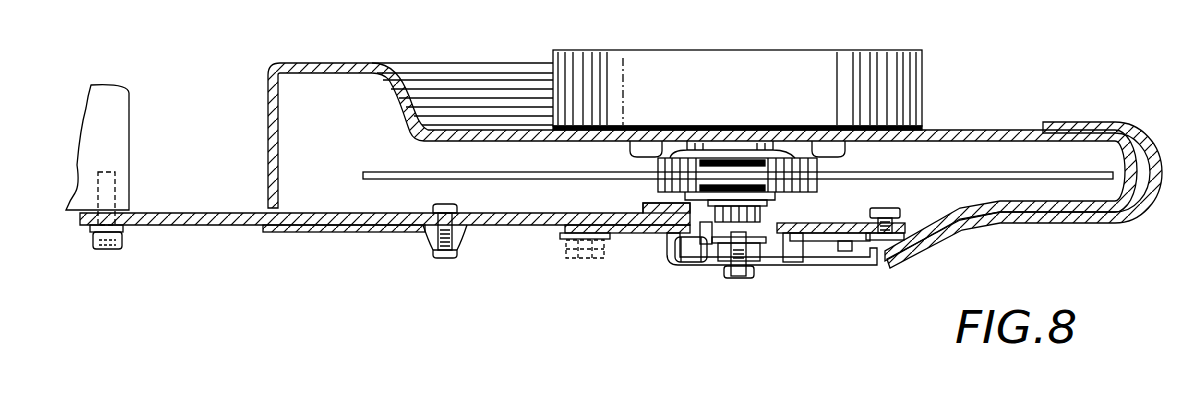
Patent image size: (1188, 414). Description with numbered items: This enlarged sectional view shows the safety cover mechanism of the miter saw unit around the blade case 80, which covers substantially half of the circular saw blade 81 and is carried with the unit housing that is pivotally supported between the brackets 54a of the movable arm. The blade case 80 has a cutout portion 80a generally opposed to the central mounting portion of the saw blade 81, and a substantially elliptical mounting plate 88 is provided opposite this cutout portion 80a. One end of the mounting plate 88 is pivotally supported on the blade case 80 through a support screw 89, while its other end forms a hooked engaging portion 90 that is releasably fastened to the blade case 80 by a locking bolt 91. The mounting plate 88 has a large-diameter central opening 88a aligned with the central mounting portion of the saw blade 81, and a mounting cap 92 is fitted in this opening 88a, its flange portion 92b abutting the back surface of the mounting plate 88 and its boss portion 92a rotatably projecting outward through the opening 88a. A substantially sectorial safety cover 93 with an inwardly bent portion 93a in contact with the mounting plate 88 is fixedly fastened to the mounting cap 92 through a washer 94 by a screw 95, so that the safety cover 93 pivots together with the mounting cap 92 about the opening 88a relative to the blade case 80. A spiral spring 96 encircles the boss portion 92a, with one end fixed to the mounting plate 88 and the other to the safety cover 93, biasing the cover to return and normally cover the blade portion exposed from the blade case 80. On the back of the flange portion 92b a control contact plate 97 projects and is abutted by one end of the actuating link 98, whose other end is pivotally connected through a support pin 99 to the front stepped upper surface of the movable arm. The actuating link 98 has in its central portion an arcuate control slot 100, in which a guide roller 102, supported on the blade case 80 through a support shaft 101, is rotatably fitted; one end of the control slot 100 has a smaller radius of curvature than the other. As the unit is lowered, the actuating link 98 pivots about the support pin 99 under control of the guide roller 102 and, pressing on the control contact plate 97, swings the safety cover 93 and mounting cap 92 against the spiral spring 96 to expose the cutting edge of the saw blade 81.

The brackets 54a is at (118, 140).
The blade case 80 is at (1023, 206).
The cutout portion 80a is at (843, 252).
The circular saw blade 81 is at (970, 170).
The mounting plate 88 is at (636, 234).
The central opening 88a is at (703, 245).
The support screw 89 is at (900, 258).
The hooked engaging portion 90 is at (560, 240).
The locking bolt 91 is at (580, 256).
The mounting cap 92 is at (764, 262).
The boss portion 92a is at (716, 262).
The flange portion 92b is at (798, 232).
The safety cover 93 is at (973, 231).
The inwardly bent portion 93a is at (667, 248).
The washer 94 is at (786, 260).
The screw 95 is at (742, 277).
The spiral spring 96 is at (685, 265).
The control contact plate 97 is at (650, 205).
The actuating link 98 is at (492, 226).
The support pin 99 is at (123, 240).
The control slot 100 is at (365, 228).
The support shaft 101 is at (432, 228).
The guide roller 102 is at (412, 232).